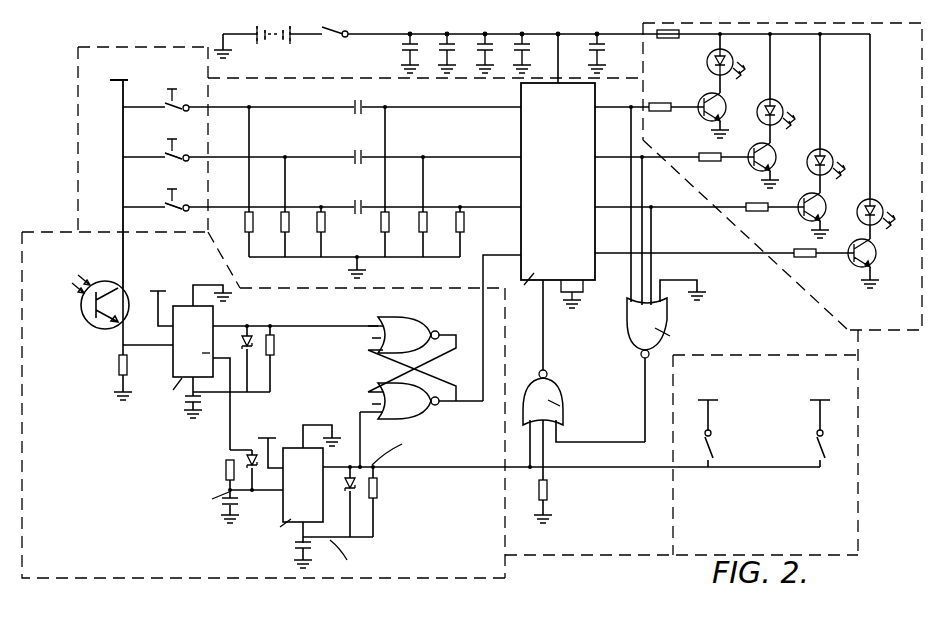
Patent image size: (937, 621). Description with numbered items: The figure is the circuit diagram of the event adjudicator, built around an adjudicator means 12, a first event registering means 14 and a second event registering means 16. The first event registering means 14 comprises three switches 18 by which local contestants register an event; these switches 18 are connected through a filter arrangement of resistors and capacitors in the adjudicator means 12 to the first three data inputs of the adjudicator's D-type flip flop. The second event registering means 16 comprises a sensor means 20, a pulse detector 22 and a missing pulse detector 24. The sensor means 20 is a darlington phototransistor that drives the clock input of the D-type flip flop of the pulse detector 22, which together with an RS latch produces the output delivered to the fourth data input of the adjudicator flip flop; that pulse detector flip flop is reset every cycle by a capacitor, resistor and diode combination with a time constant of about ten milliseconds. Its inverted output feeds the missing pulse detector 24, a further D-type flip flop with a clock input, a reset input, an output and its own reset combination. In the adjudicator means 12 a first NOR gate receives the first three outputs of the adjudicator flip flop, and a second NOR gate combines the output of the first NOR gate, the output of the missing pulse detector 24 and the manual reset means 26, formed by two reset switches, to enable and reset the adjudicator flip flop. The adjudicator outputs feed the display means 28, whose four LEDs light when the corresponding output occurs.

The adjudicator means 12 is at (492, 194).
The first event registering means 14 is at (104, 147).
The second event registering means 16 is at (122, 523).
The switches 18 is at (177, 204).
The sensor means 20 is at (110, 350).
The pulse detector 22 is at (284, 331).
The missing pulse detector 24 is at (262, 521).
The manual reset means 26 is at (778, 412).
The display means 28 is at (888, 320).